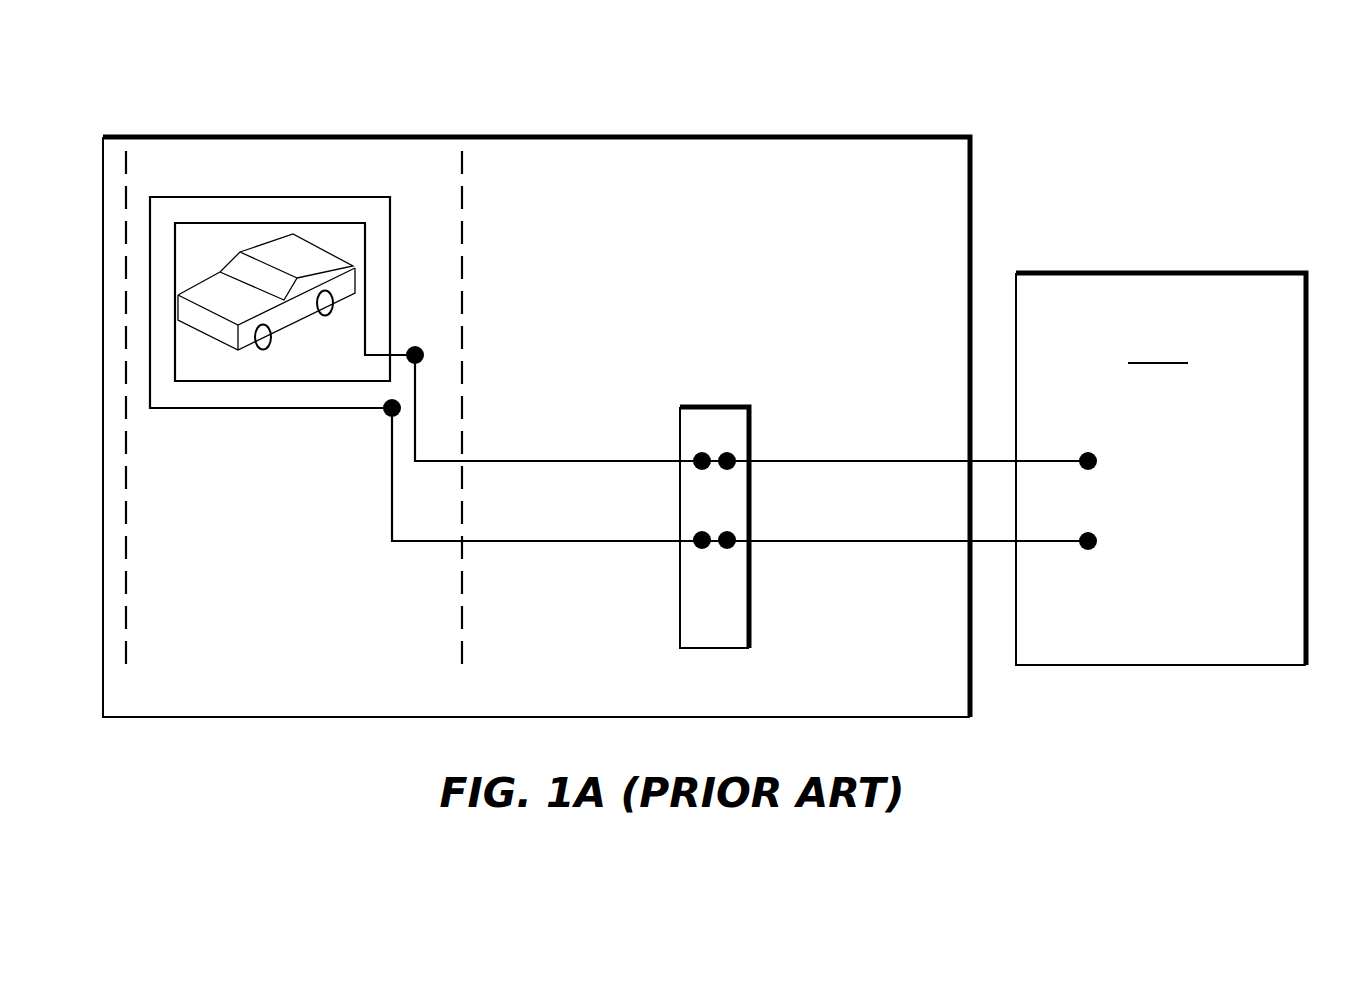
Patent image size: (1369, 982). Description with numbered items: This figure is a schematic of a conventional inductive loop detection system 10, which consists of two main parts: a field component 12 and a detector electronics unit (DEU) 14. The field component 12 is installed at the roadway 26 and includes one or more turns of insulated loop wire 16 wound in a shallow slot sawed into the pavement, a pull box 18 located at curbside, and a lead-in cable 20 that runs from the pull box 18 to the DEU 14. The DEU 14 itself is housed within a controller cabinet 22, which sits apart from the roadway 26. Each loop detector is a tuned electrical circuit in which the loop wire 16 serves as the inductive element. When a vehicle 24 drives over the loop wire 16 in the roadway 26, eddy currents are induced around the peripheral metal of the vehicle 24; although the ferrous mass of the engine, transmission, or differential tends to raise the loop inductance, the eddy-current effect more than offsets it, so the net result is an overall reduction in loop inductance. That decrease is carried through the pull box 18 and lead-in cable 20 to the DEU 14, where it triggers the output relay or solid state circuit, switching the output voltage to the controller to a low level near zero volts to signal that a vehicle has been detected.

The inductive loop detection system 10 is at (701, 443).
The field component 12 is at (737, 136).
The detector electronics unit (DEU) 14 is at (1190, 347).
The loop wire 16 is at (391, 273).
The pull box 18 is at (679, 601).
The lead-in cable 20 is at (803, 459).
The controller cabinet 22 is at (1310, 377).
The vehicle 24 is at (272, 238).
The roadway 26 is at (120, 503).